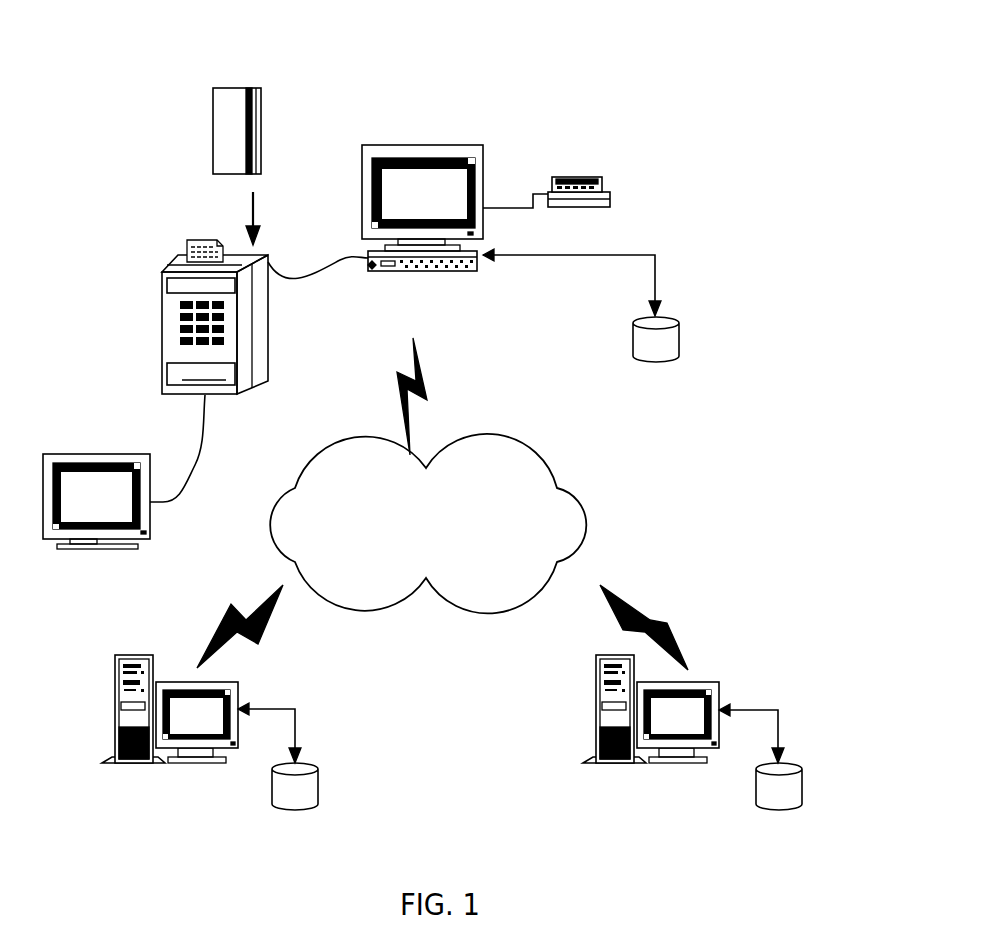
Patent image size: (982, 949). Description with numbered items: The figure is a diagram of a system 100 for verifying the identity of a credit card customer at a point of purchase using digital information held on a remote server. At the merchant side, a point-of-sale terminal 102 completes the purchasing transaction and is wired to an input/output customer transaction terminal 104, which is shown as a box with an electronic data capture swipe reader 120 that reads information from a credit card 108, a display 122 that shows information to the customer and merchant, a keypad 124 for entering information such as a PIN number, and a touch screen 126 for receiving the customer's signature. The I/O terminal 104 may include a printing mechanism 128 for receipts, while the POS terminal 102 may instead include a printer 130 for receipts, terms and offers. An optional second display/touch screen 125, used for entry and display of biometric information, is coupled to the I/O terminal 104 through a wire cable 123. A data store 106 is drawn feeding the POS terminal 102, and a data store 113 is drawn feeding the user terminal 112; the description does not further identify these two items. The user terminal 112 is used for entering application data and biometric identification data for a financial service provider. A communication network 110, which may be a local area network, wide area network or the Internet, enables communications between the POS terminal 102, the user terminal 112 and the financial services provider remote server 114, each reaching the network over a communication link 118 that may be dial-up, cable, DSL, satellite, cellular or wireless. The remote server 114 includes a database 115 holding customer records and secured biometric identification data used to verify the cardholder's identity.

The system 100 is at (585, 64).
The point-of-sale terminal 102 is at (422, 145).
The input/output customer transaction terminal 104 is at (187, 343).
The data store 106 is at (633, 342).
The credit card 108 is at (227, 88).
The communication network 110 is at (612, 524).
The user terminal 112 is at (115, 709).
The user terminal data store 113 is at (318, 790).
The financial services provider remote server 114 is at (596, 710).
The database 115 is at (802, 790).
The communication link 118 is at (397, 372).
The electronic data capture swipe reader 120 is at (248, 411).
The display 122 is at (167, 282).
The wire cable 123 is at (192, 486).
The keypad 124 is at (182, 316).
The second display/touch screen 125 is at (96, 549).
The touch screen 126 is at (167, 372).
The printing mechanism 128 is at (187, 244).
The printer 130 is at (612, 194).